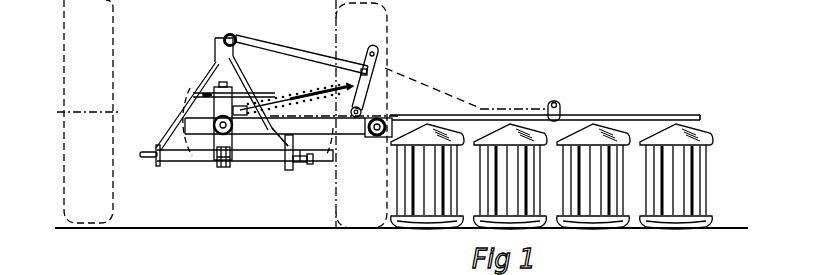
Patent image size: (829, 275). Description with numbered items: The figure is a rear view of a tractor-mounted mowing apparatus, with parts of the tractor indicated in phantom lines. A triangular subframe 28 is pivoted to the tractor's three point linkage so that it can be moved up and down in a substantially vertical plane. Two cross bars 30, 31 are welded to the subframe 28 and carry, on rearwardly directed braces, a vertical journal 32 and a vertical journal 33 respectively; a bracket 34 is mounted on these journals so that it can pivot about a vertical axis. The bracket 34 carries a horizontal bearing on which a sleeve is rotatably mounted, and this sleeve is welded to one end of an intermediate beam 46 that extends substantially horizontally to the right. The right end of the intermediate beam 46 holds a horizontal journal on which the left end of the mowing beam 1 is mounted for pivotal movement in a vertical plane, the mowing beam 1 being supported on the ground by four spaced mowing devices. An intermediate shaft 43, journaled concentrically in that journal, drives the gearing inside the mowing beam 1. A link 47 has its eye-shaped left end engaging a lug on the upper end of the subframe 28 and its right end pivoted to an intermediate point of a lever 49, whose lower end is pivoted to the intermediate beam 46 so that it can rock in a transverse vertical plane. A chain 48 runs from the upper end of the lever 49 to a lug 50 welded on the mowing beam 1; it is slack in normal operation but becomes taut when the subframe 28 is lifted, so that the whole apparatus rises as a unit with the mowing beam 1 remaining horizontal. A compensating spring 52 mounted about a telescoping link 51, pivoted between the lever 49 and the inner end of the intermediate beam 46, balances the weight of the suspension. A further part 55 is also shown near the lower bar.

The mowing beam 1 is at (700, 126).
The triangular subframe 28 is at (205, 80).
The cross bar 30 is at (203, 98).
The cross bar 31 is at (168, 160).
The vertical journal 32 is at (212, 52).
The vertical journal 33 is at (221, 167).
The bracket 34 is at (214, 111).
The intermediate shaft 43 is at (382, 110).
The intermediate beam 46 is at (322, 132).
The link 47 is at (257, 42).
The chain 48 is at (432, 98).
The lever 49 is at (377, 62).
The lug 50 is at (557, 104).
The telescoping link 51 is at (262, 102).
The compensating spring 52 is at (318, 88).
The bracket 55 is at (298, 170).